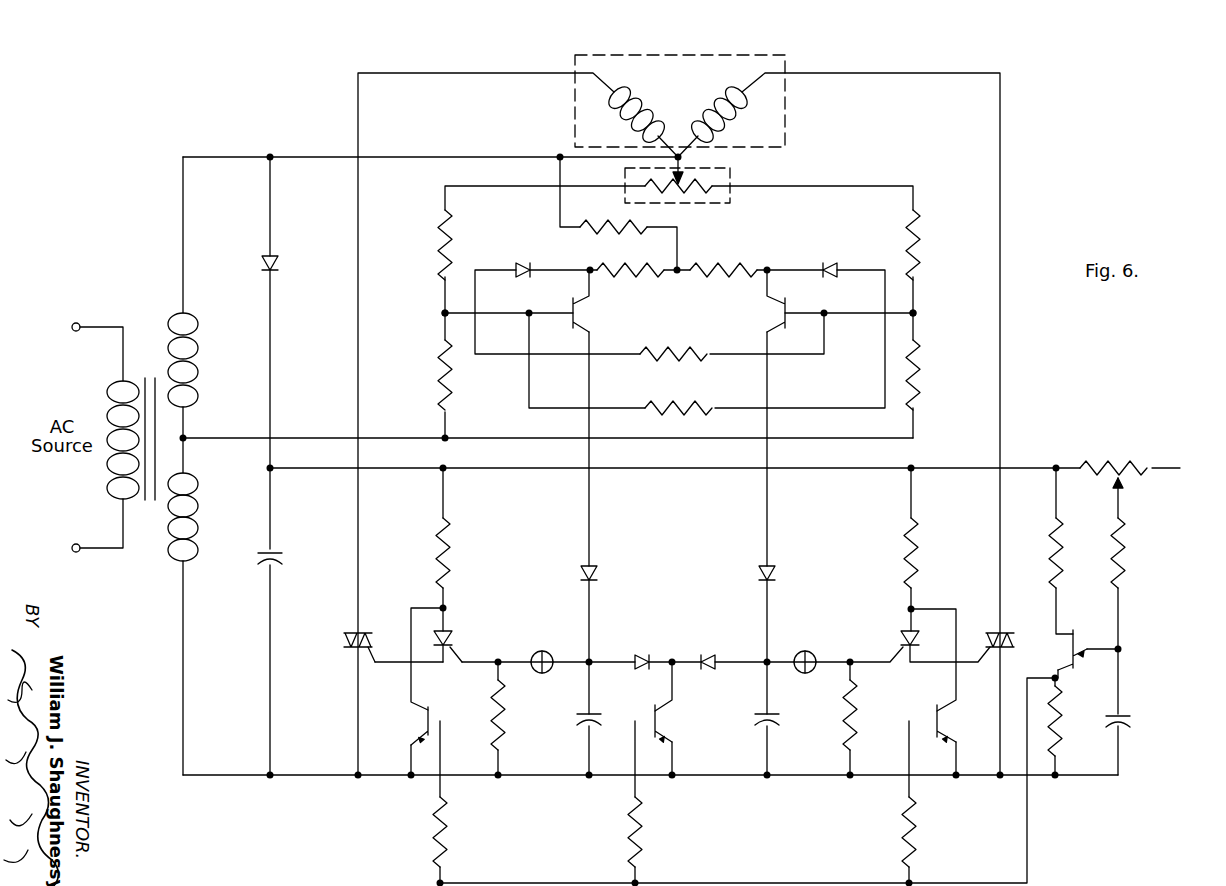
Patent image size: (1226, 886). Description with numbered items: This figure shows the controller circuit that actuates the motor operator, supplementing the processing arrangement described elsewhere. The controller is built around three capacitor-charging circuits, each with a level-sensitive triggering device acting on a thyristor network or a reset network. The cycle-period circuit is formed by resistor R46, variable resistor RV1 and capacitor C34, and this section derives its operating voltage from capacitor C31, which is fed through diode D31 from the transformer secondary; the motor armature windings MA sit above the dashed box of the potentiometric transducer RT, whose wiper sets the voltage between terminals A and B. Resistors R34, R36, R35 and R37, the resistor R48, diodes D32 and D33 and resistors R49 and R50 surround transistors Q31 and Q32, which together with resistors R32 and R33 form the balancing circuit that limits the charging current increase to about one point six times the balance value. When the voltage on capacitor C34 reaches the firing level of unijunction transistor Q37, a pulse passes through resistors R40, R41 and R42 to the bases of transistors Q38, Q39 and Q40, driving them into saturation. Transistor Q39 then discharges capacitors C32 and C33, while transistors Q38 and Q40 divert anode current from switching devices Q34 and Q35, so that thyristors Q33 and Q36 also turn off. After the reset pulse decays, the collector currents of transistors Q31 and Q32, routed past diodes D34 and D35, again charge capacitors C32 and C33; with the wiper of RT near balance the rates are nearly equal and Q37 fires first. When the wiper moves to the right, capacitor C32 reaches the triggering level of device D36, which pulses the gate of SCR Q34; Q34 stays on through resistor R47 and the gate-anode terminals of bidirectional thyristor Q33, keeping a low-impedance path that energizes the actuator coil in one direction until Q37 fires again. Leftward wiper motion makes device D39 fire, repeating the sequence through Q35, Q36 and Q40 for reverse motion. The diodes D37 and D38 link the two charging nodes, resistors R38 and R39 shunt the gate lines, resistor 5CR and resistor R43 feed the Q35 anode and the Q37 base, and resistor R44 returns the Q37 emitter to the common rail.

The motor armature windings MA is at (680, 95).
The potentiometric transducer RT is at (692, 180).
The rectifier diode D31 is at (290, 263).
The capacitor C31 is at (290, 557).
The bridge resistor R34 is at (427, 245).
The bridge resistor R36 is at (427, 375).
The bridge resistor R35 is at (931, 245).
The bridge resistor R37 is at (931, 375).
The wiper series resistor R48 is at (613, 227).
The diode D32 is at (523, 259).
The diode D33 is at (830, 259).
The resistor R49 is at (630, 281).
The resistor R50 is at (723, 281).
The resistor R32 is at (673, 344).
The resistor R33 is at (678, 398).
The transistor Q31 is at (595, 301).
The transistor Q32 is at (760, 301).
The terminal A is at (437, 313).
The terminal B is at (922, 313).
The resistor RV1 is at (1113, 464).
The resistor R47 is at (425, 553).
The diode D34 is at (608, 574).
The diode D35 is at (786, 574).
The resistor 5CR is at (892, 564).
The resistor R43 is at (1038, 553).
The resistor R46 is at (1137, 553).
The bidirectional thyristor Q33 is at (337, 640).
The SCR device Q34 is at (462, 640).
The switching transistor Q35 is at (891, 640).
The thyristor Q36 is at (1013, 626).
The device D36 is at (542, 651).
The device D39 is at (805, 651).
The diode D37 is at (642, 662).
The diode D38 is at (708, 662).
The resistor R38 is at (517, 715).
The capacitor C32 is at (603, 709).
The capacitor C33 is at (787, 720).
The resistor R39 is at (869, 715).
The transistor Q38 is at (406, 726).
The transistor Q39 is at (679, 723).
The transistor Q40 is at (961, 723).
The unijunction transistor Q37 is at (1080, 637).
The resistor R44 is at (1074, 721).
The capacitor C34 is at (1139, 720).
The resistor R40 is at (459, 832).
The resistor R41 is at (654, 832).
The resistor R42 is at (928, 832).